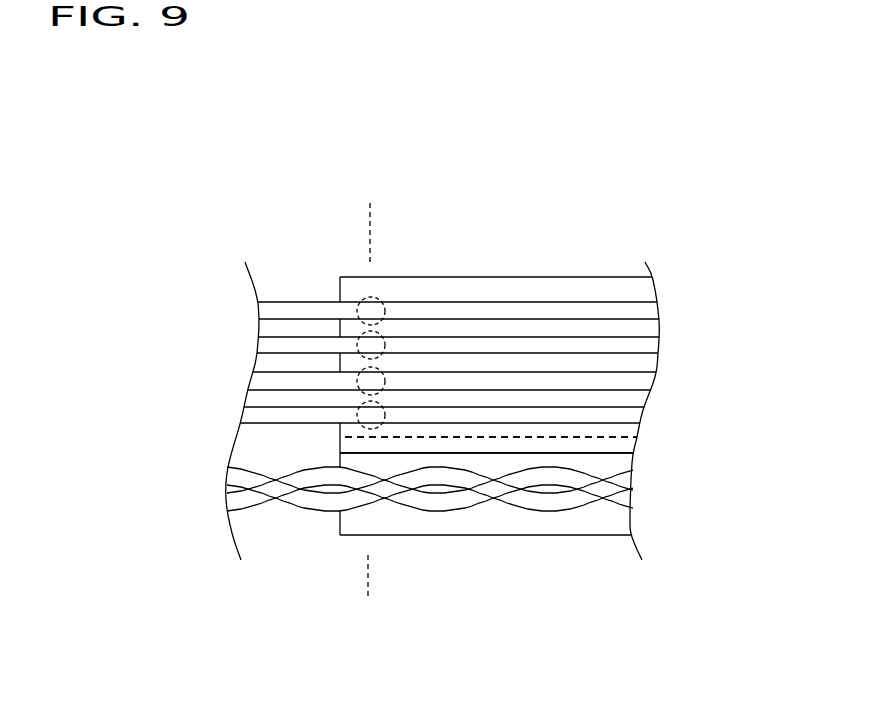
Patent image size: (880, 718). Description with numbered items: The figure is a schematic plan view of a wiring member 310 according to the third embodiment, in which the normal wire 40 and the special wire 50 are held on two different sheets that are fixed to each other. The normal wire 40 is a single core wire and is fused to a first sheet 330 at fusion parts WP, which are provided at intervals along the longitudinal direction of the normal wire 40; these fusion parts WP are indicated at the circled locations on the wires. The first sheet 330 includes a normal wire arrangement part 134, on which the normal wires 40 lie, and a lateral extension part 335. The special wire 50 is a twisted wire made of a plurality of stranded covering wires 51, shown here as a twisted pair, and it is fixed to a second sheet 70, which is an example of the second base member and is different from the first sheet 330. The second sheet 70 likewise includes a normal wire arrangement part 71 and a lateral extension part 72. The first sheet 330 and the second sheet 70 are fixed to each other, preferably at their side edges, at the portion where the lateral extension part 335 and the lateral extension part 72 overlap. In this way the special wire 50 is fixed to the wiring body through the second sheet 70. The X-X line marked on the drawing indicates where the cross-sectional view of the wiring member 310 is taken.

The wiring member 310 is at (219, 166).
The first sheet 330 is at (578, 277).
The normal wire 40 is at (257, 343).
The normal wire arrangement part 134 is at (636, 371).
The lateral extension part 335 is at (622, 447).
The lateral extension part 72 is at (544, 448).
The normal wire arrangement part 71 is at (613, 522).
The second sheet 70 is at (583, 536).
The covering wire 51 is at (538, 590).
The special wire 50 is at (430, 548).
The fusion part WP is at (400, 337).
The X-X line X is at (379, 212).